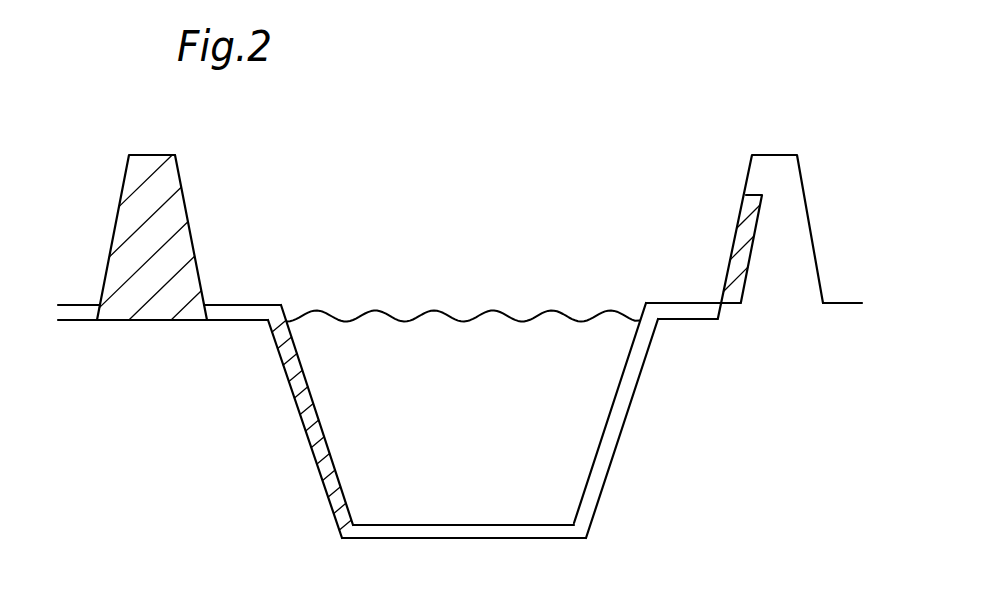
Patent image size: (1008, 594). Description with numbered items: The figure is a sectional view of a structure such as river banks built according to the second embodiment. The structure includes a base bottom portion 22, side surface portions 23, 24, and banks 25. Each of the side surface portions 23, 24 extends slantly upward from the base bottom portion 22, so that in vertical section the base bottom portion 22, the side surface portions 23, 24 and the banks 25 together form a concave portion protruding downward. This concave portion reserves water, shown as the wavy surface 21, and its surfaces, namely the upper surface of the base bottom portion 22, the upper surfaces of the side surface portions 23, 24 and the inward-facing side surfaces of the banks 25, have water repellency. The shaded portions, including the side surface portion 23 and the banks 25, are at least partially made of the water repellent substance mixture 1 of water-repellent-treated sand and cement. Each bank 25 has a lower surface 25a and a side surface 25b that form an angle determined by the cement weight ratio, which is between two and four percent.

The water repellent substance mixture 1 is at (182, 253).
The liquid 21 is at (478, 310).
The base bottom portion 22 is at (468, 522).
The side surface portion 23 is at (310, 387).
The side surface portion 24 is at (630, 412).
The bank 25 is at (152, 153).
The lower surface 25a is at (150, 322).
The side surface 25b is at (187, 205).